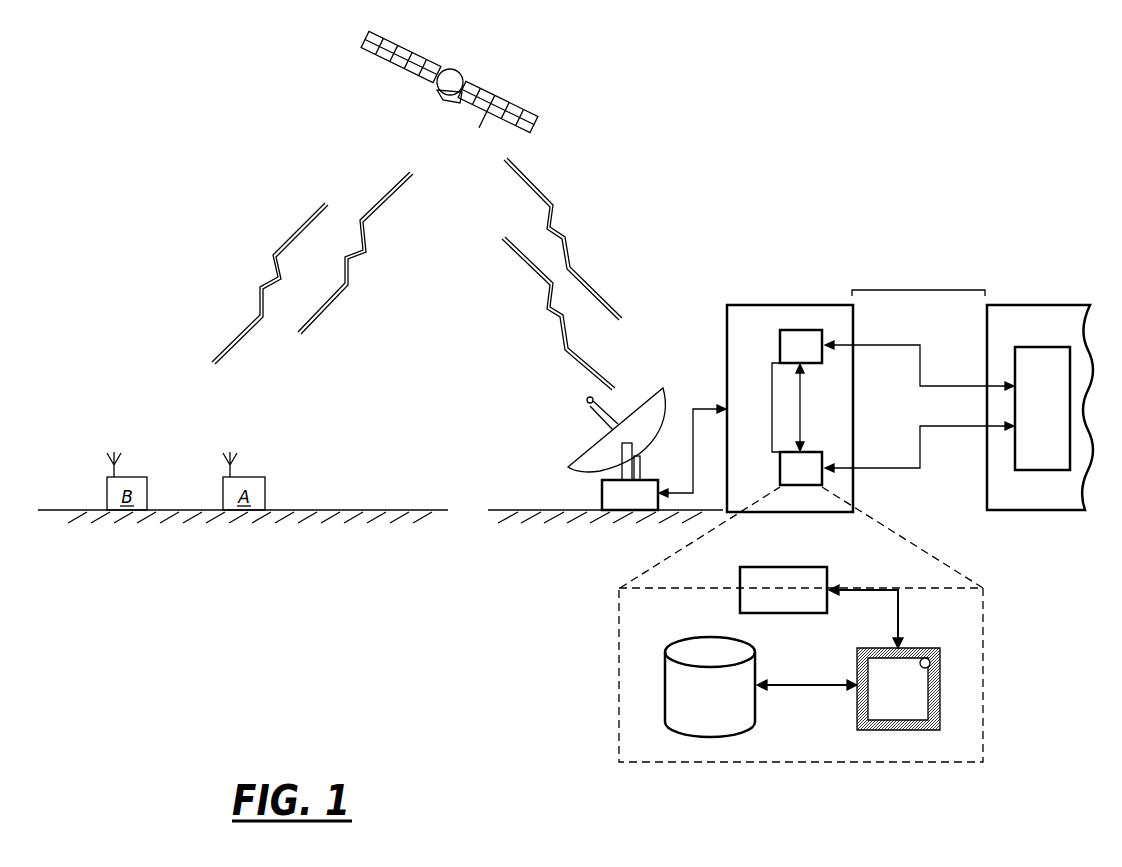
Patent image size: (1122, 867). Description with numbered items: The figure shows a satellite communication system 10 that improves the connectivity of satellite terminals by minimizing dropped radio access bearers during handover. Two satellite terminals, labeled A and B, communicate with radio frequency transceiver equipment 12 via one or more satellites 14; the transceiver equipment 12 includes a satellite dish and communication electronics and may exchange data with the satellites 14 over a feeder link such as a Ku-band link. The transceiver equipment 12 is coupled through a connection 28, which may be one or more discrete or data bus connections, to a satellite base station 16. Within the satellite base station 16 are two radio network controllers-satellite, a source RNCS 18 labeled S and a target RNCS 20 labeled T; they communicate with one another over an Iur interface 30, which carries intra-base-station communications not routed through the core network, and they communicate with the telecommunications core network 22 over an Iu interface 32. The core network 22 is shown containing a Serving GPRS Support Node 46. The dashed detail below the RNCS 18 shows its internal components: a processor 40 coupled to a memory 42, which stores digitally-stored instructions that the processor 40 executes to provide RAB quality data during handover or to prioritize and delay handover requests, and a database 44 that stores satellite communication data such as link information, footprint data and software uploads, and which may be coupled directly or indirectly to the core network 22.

The satellite communication system 10 is at (313, 686).
The radio frequency transceiver equipment 12 is at (570, 452).
The satellite 14 is at (418, 77).
The satellite base station 16 is at (806, 298).
The radio network controller-satellite 18 is at (779, 462).
The radio network controller-satellite 20 is at (779, 333).
The telecommunications core network 22 is at (1058, 298).
The connection 28 is at (692, 437).
The radio network controller interface (Iur interface) 30 is at (771, 407).
The core network interface (Iu interface) 32 is at (918, 290).
The processor 40 is at (885, 701).
The memory 42 is at (739, 582).
The database 44 is at (665, 690).
The Serving GPRS Support Node (SGSN) 46 is at (1029, 422).